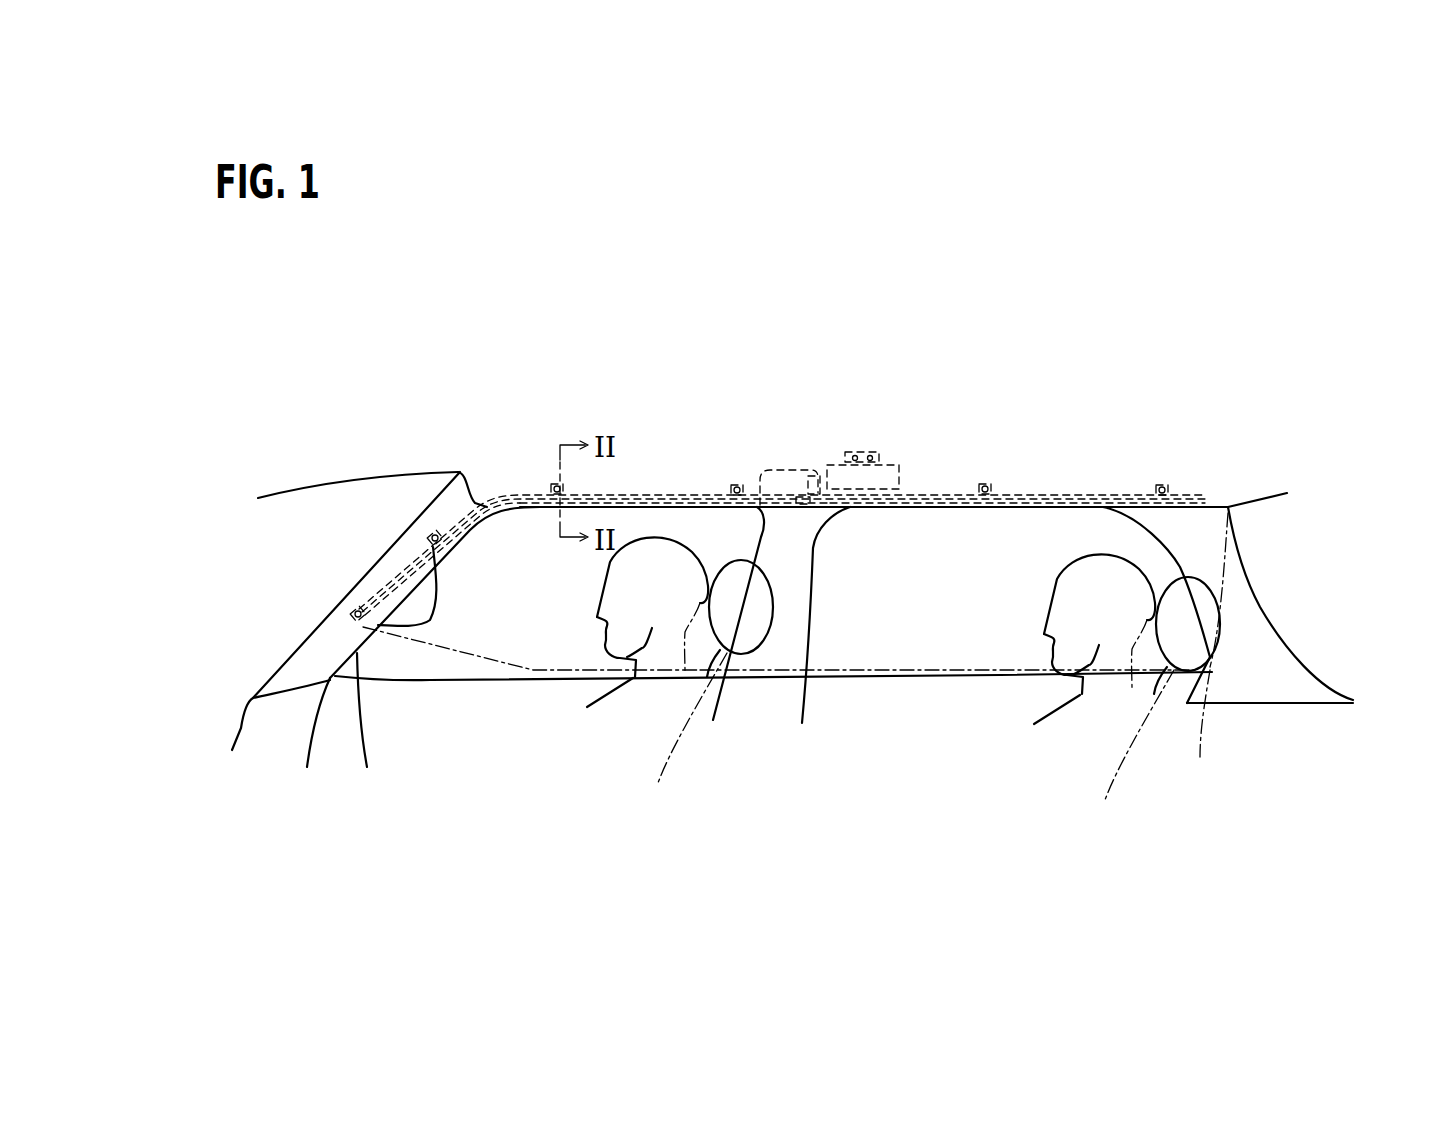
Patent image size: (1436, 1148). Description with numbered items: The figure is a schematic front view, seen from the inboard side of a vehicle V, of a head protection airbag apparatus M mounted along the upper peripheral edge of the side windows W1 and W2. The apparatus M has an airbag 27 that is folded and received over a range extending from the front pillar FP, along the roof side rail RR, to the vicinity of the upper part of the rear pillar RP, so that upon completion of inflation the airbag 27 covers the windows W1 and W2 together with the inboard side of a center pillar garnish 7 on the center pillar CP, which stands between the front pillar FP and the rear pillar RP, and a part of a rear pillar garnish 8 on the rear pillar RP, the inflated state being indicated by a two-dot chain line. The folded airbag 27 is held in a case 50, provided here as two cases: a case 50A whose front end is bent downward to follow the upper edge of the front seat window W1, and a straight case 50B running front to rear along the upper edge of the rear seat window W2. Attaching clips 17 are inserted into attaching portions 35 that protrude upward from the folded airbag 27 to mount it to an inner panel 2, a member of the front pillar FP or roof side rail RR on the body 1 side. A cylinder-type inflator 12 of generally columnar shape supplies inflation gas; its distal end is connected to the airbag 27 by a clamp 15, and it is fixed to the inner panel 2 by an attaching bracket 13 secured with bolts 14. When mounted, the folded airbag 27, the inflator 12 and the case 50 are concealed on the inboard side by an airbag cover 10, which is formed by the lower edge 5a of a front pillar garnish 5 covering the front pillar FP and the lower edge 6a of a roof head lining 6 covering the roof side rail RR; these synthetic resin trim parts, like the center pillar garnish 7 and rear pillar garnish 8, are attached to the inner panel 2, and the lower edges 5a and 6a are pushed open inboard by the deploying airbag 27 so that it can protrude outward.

The body 1 is at (783, 555).
The inner panel 2 is at (377, 580).
The front pillar garnish 5 is at (320, 640).
The lower edge of front pillar garnish 5a is at (355, 740).
The roof head lining 6 is at (1003, 507).
The lower edge of roof head lining 6a is at (1003, 507).
The center pillar garnish 7 is at (782, 657).
The rear pillar garnish 8 is at (1253, 683).
The airbag cover 10 is at (362, 710).
The inflator 12 is at (893, 437).
The attaching bracket 13 is at (845, 470).
The bolts 14 is at (872, 452).
The clamp 15 is at (811, 492).
The attaching clips 17 is at (350, 616).
The airbag 27 is at (560, 672).
The attaching portions 35 is at (355, 603).
The case 50 is at (442, 559).
The case for front protective portion 50A is at (520, 487).
The case for rear protective portion 50B is at (1118, 490).
The vehicle V is at (306, 330).
The head protection airbag apparatus M is at (1263, 388).
The front pillar FP is at (286, 580).
The rear pillar RP is at (1293, 597).
The roof side rail RR is at (670, 467).
The center pillar CP is at (820, 653).
The window W1 is at (450, 665).
The window W2 is at (972, 657).